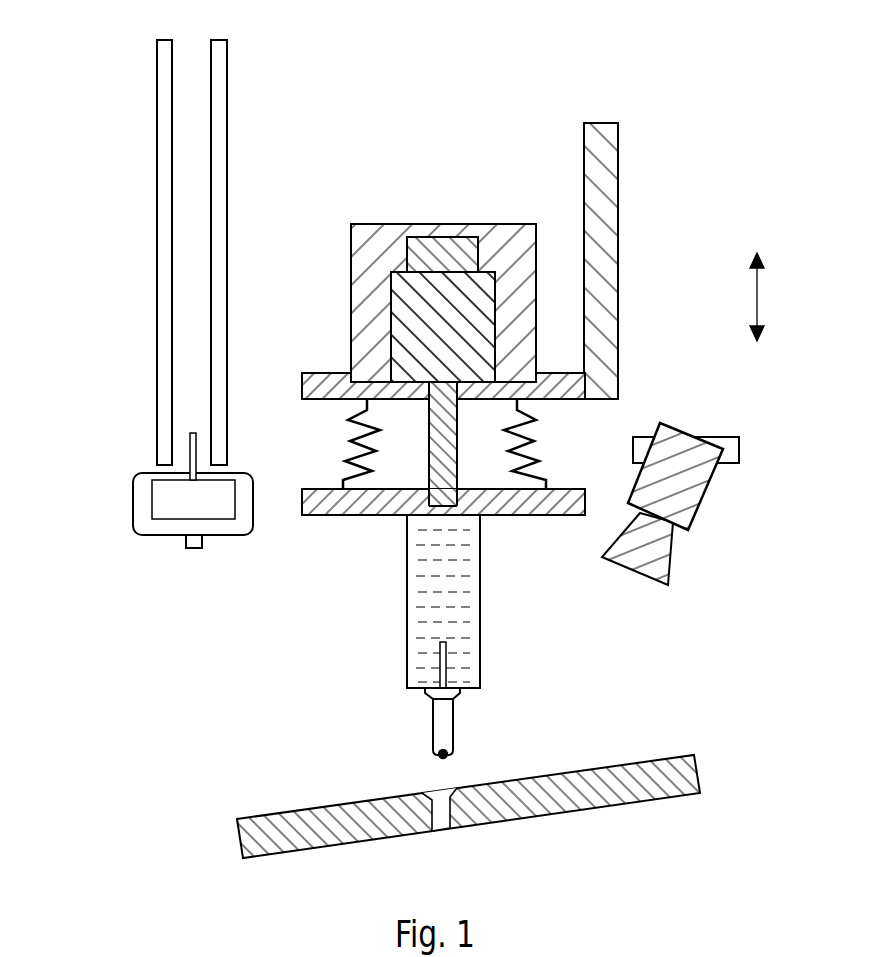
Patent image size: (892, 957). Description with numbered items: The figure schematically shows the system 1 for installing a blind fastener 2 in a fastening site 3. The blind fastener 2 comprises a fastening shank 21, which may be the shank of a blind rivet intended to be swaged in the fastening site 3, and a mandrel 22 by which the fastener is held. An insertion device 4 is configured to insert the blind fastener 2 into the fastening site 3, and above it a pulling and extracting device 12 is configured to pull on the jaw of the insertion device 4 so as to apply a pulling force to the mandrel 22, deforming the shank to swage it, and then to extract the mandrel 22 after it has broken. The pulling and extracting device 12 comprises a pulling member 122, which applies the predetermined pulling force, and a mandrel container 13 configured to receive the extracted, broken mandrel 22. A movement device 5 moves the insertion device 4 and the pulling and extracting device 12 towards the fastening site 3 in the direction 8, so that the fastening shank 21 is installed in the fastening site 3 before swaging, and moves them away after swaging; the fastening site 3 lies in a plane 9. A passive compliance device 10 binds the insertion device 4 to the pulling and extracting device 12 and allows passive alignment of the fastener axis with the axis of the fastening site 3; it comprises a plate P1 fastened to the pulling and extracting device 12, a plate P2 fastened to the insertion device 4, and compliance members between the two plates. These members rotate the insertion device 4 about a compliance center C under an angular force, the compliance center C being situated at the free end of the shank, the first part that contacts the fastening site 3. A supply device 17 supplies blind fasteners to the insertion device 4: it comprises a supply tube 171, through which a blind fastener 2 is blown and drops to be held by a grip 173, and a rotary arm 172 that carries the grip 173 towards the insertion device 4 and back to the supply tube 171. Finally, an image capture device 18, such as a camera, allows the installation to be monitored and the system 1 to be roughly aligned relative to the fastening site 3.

The system 1 is at (695, 108).
The blind fastener 2 is at (472, 723).
The fastening site 3 is at (441, 828).
The insertion device 4 is at (430, 616).
The movement device 5 is at (618, 135).
The direction 8 is at (757, 297).
The plane 9 is at (650, 758).
The passive compliance device 10 is at (304, 526).
The pulling and extracting device 12 is at (375, 262).
The mandrel container 13 is at (472, 255).
The supply device 17 is at (100, 431).
The image capture device 18 is at (705, 500).
The fastening shank 21 is at (433, 727).
The mandrel 22 is at (446, 660).
The pulling member 122 is at (462, 319).
The supply tube 171 is at (157, 145).
The rotary arm 172 is at (143, 473).
The grip 173 is at (157, 528).
The plate P1 is at (322, 382).
The plate P2 is at (338, 522).
The compliance center C is at (443, 757).